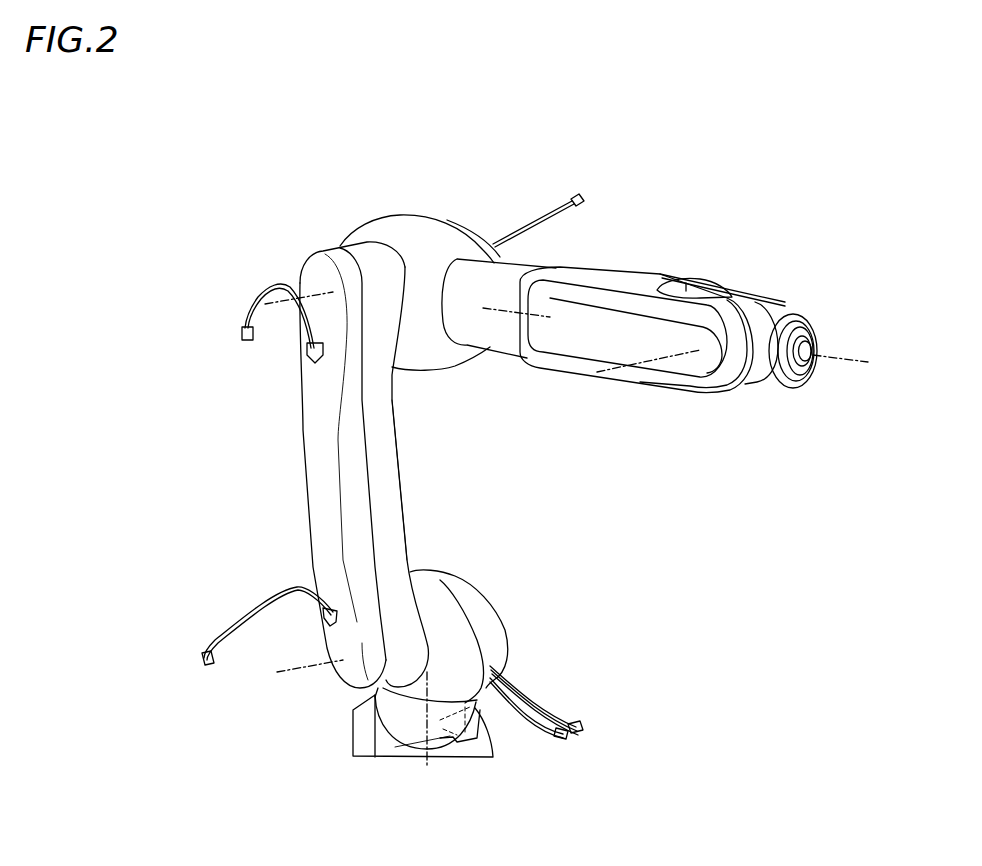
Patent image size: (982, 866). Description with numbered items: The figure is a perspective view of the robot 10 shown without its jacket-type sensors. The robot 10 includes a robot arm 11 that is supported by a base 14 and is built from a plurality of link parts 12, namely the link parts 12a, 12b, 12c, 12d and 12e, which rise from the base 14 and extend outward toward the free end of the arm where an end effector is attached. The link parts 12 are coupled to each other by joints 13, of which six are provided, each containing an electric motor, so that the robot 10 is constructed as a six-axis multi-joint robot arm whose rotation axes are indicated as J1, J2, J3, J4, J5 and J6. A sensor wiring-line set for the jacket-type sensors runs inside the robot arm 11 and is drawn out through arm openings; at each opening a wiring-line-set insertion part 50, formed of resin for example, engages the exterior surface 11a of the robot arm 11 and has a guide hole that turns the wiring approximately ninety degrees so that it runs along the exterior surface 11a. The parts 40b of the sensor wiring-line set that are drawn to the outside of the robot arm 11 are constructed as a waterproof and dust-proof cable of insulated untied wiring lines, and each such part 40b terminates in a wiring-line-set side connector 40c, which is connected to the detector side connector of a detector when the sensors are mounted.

The robot 10 is at (124, 197).
The robot arm 11 is at (185, 362).
The exterior surface 11a is at (318, 462).
The link parts 12 is at (408, 537).
The link part 12a is at (500, 618).
The link part 12b is at (382, 490).
The link part 12c is at (408, 230).
The link part 12d is at (626, 280).
The link part 12e is at (755, 300).
The joints 13 is at (370, 237).
The base 14 is at (471, 712).
The part of the sensor wiring-line set 40b is at (263, 285).
The wiring-line-set side connector 40c is at (249, 341).
The wiring-line-set insertion part 50 is at (320, 367).
The joint axis J1 is at (425, 735).
The joint axis J2 is at (296, 676).
The joint axis J3 is at (296, 313).
The joint axis J4 is at (500, 311).
The joint axis J5 is at (634, 376).
The joint axis J6 is at (852, 365).